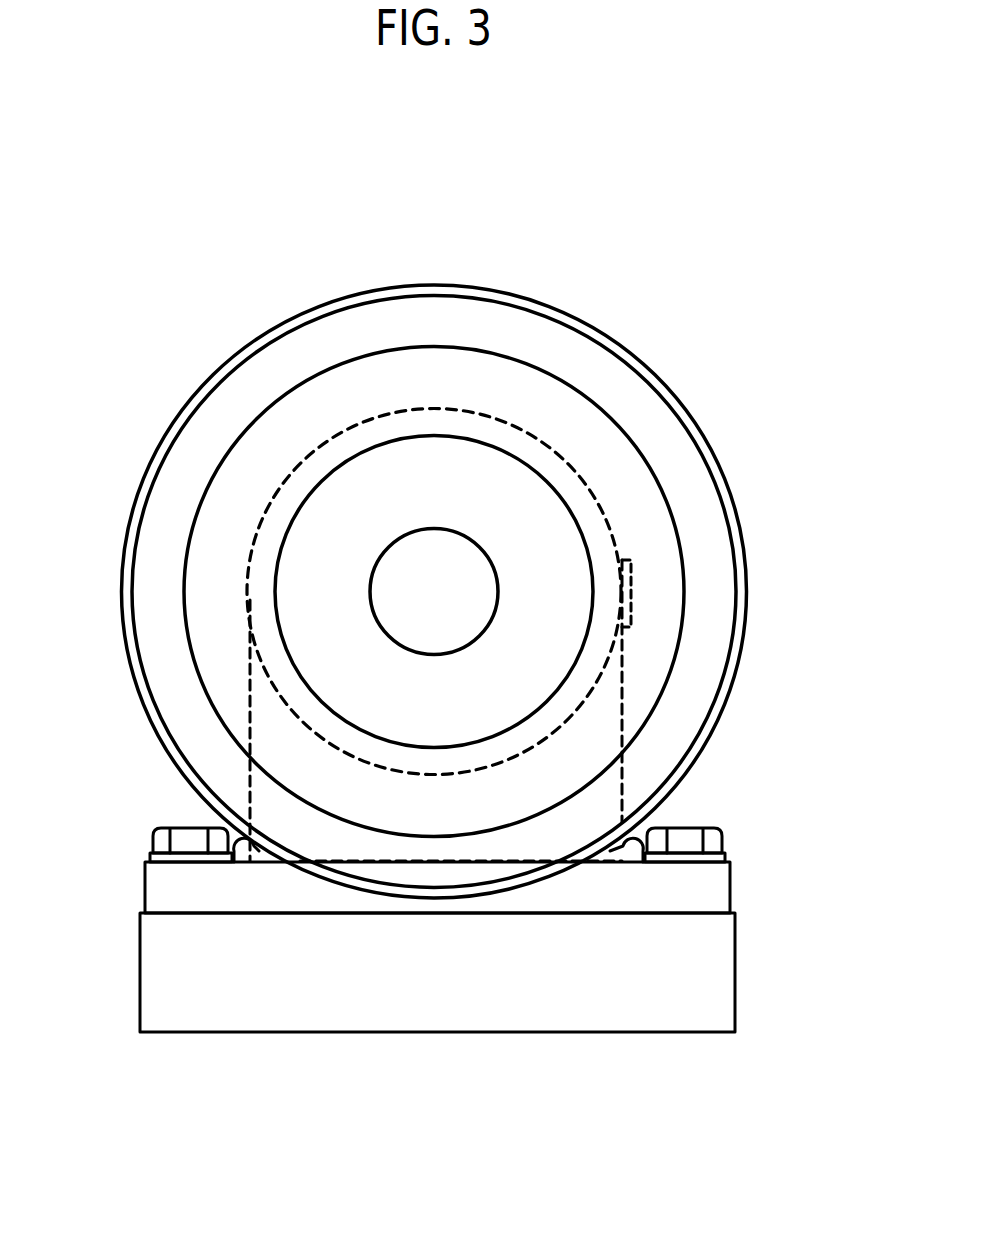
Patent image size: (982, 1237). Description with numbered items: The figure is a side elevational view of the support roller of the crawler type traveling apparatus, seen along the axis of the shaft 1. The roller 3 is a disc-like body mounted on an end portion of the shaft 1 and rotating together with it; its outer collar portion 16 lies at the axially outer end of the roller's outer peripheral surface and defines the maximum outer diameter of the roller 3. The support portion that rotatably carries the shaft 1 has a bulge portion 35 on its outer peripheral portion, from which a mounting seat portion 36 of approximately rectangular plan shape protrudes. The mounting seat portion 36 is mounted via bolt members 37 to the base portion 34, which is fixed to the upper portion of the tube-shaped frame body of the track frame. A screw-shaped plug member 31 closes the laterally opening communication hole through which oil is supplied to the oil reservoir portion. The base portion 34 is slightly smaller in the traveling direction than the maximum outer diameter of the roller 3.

The shaft 1 is at (458, 588).
The roller 3 is at (628, 346).
The outer collar portion 16 is at (340, 327).
The plug member 31 is at (633, 592).
The base portion 34 is at (717, 963).
The bulge portion 35 is at (608, 724).
The mounting seat portion 36 is at (716, 888).
The bolt member 37 is at (150, 840).